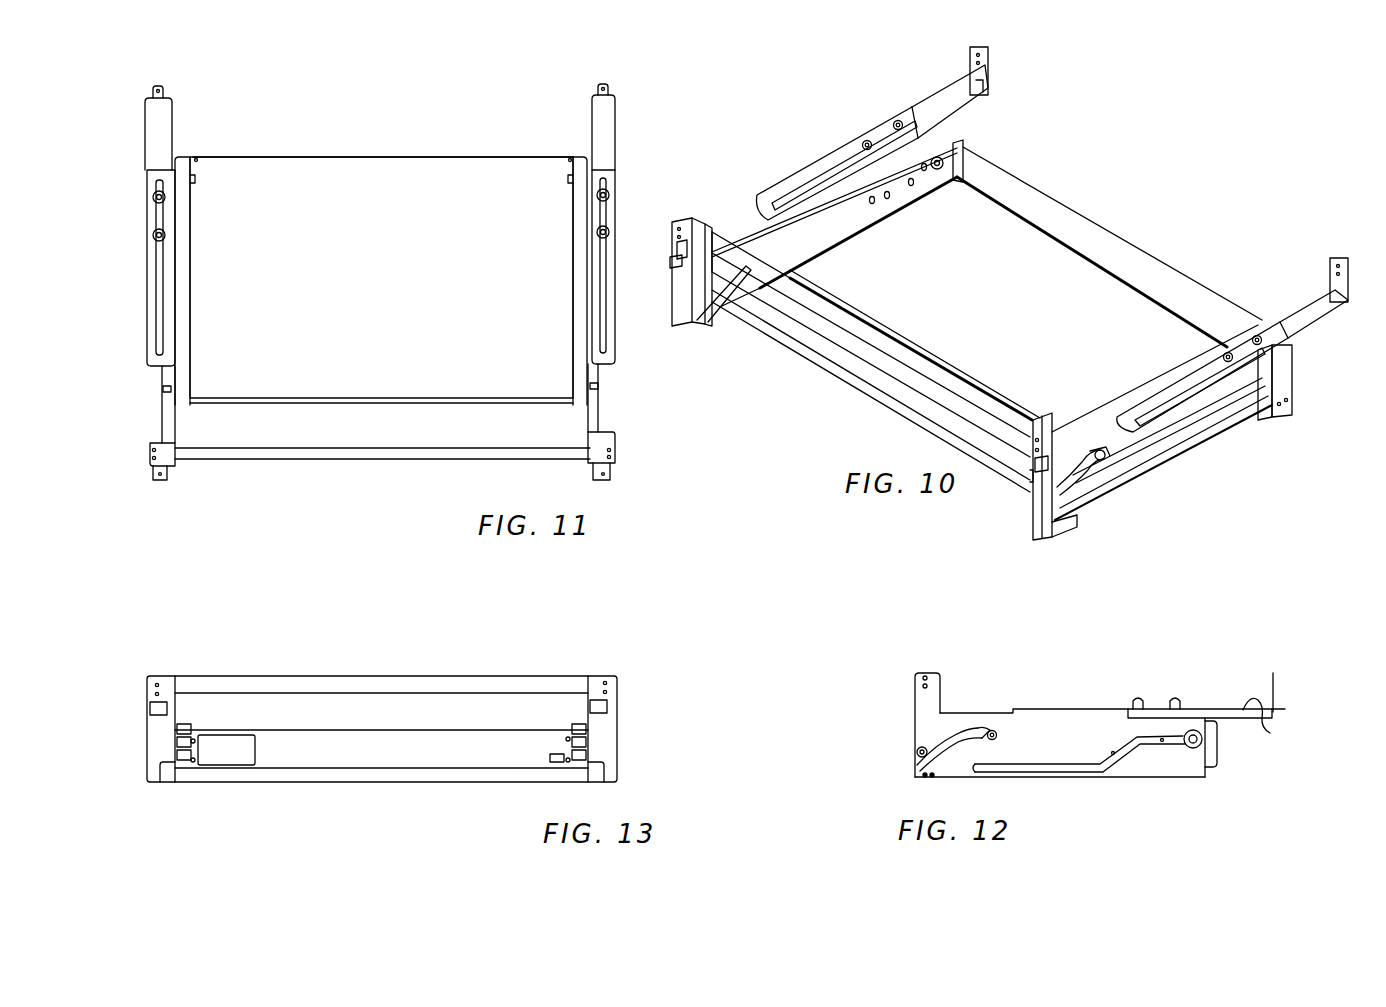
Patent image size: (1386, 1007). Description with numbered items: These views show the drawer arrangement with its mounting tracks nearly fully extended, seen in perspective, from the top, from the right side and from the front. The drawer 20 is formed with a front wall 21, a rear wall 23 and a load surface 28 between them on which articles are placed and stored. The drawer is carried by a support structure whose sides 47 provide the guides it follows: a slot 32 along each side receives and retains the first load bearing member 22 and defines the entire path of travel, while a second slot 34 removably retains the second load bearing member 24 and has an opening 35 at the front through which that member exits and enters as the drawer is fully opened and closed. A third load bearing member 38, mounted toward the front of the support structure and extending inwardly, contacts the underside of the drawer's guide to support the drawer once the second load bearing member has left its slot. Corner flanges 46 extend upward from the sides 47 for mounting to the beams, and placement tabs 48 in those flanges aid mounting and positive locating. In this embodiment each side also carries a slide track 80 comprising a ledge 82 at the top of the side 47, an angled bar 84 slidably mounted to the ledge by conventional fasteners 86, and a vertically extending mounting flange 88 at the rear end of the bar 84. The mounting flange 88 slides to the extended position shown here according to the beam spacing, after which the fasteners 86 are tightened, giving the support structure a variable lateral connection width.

In FIG. 13, the drawer 20 is at (482, 720).
In FIG. 11, the front wall 21 is at (448, 403).
In FIG. 10, the front wall 21 is at (905, 375).
In FIG. 13, the front wall 21 is at (403, 761).
In FIG. 10, the first load bearing member 22 is at (950, 158).
In FIG. 12, the first load bearing member 22 is at (1190, 752).
In FIG. 11, the rear wall 23 is at (416, 162).
In FIG. 10, the rear wall 23 is at (1112, 252).
In FIG. 11, the second load bearing member 24 is at (604, 386).
In FIG. 10, the second load bearing member 24 is at (1098, 445).
In FIG. 11, the load surface 28 is at (416, 292).
In FIG. 10, the load surface 28 is at (1023, 305).
In FIG. 10, the guide (slot) 32 is at (1192, 415).
In FIG. 12, the guide (slot) 32 is at (1115, 758).
In FIG. 10, the guide (slot) 34 is at (1076, 485).
In FIG. 12, the guide (slot) 34 is at (958, 728).
In FIG. 10, the opening 35 is at (690, 335).
In FIG. 13, the opening 35 is at (612, 770).
In FIG. 10, the third load bearing member 38 is at (728, 322).
In FIG. 10, the corner flanges 46 is at (698, 215).
In FIG. 13, the corner flanges 46 is at (620, 670).
In FIG. 12, the corner flanges 46 is at (940, 672).
In FIG. 11, the sides 47 is at (602, 410).
In FIG. 10, the sides 47 is at (768, 204).
In FIG. 12, the sides 47 is at (1015, 706).
In FIG. 11, the placement tabs 48 is at (612, 478).
In FIG. 10, the placement tabs 48 is at (1032, 486).
In FIG. 12, the placement tabs 48 is at (913, 712).
In FIG. 10, the slide track 80 is at (873, 75).
In FIG. 11, the ledge 82 is at (606, 340).
In FIG. 10, the ledge 82 is at (810, 162).
In FIG. 12, the ledge 82 is at (1080, 702).
In FIG. 11, the bar 84 is at (612, 122).
In FIG. 10, the bar 84 is at (962, 114).
In FIG. 12, the bar 84 is at (1269, 727).
In FIG. 11, the fasteners 86 is at (610, 194).
In FIG. 10, the fasteners 86 is at (868, 140).
In FIG. 12, the fasteners 86 is at (1176, 698).
In FIG. 11, the mounting flange 88 is at (614, 90).
In FIG. 10, the mounting flange 88 is at (990, 62).
In FIG. 12, the mounting flange 88 is at (1266, 690).